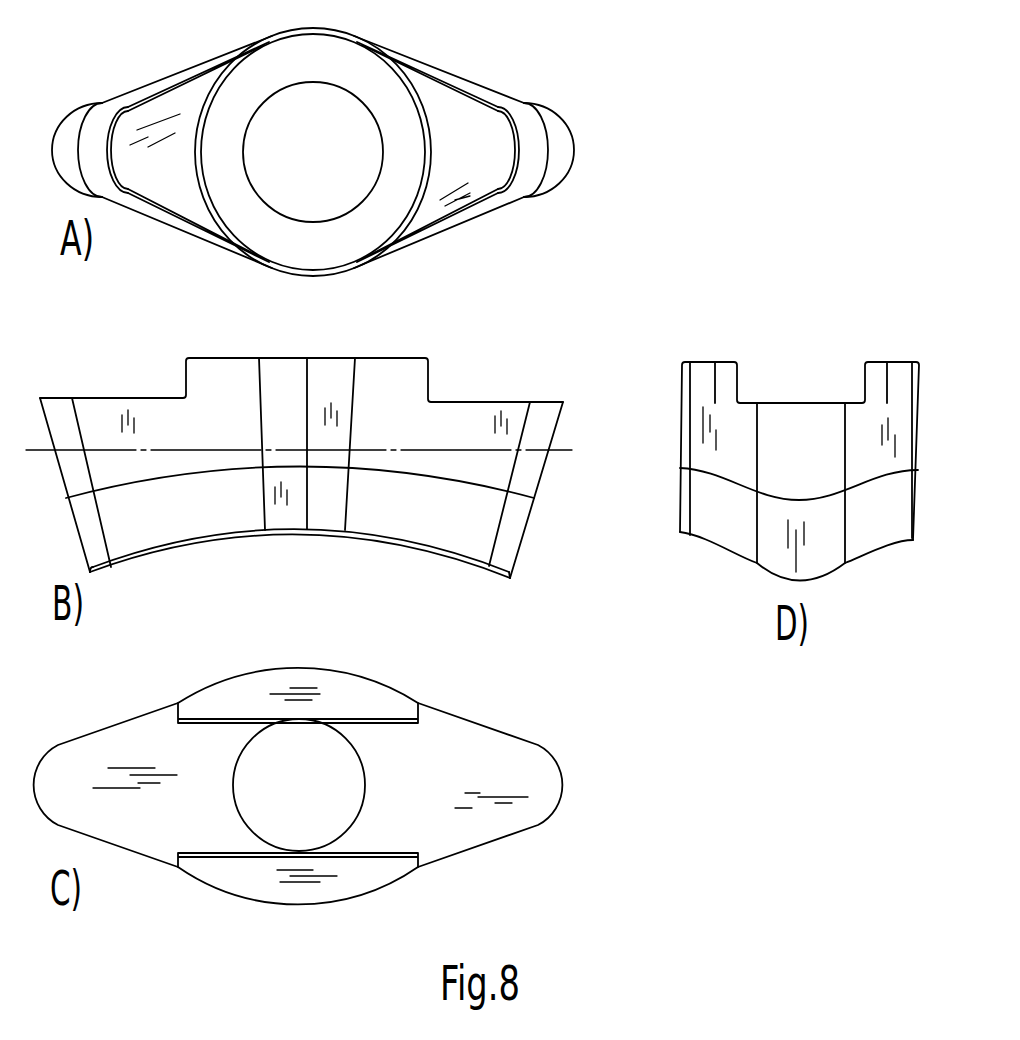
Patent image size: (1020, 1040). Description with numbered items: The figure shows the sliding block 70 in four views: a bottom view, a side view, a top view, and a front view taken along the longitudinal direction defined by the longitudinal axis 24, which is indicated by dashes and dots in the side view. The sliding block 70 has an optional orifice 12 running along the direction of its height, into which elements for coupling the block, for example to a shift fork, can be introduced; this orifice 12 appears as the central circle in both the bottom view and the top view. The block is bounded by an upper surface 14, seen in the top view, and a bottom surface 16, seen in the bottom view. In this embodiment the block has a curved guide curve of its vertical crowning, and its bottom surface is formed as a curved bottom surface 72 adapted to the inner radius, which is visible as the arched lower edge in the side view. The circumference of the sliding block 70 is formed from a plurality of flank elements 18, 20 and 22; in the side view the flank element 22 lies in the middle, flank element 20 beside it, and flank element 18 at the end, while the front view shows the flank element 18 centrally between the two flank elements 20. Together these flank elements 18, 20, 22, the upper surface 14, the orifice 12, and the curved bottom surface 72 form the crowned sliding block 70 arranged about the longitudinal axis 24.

In FIG. 8A, the orifice 12 is at (323, 144).
In FIG. 8C, the orifice 12 is at (318, 798).
In FIG. 8C, the upper surface 14 is at (455, 785).
In FIG. 8A, the bottom surface 16 is at (475, 145).
In FIG. 8B, the flank element 18 is at (534, 467).
In FIG. 8D, the flank element 18 is at (815, 458).
In FIG. 8B, the flank element 20 is at (465, 427).
In FIG. 8D, the flank element 20 is at (729, 525).
In FIG. 8B, the flank element 22 is at (332, 384).
In FIG. 8B, the longitudinal axis 24 is at (45, 454).
In FIG. 8C, the sliding block 70 is at (624, 646).
In FIG. 8B, the curved bottom surface 72 is at (411, 553).